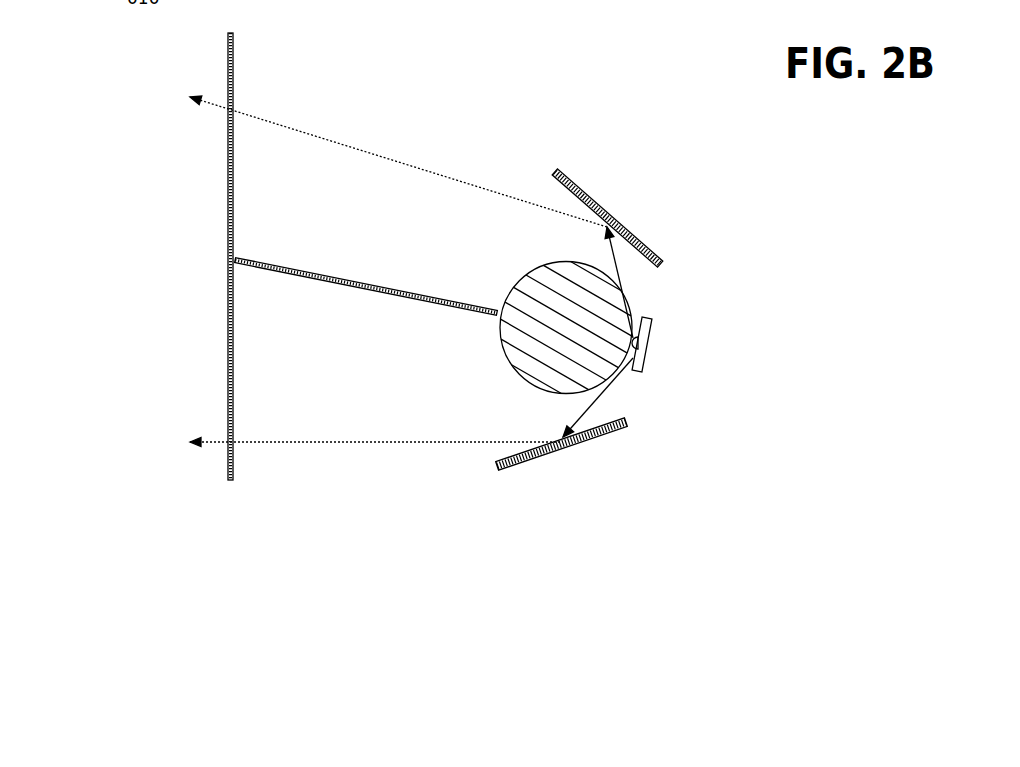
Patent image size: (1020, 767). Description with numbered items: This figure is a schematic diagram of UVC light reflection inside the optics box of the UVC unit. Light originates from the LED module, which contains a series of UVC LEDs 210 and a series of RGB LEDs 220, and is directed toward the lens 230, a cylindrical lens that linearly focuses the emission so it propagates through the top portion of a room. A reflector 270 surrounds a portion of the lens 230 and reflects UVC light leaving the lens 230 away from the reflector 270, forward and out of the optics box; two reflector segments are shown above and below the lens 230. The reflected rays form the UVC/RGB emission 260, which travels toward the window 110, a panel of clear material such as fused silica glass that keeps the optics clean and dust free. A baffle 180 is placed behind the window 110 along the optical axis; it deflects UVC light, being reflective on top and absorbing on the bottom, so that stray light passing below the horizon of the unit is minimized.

The window 110 is at (233, 480).
The baffle 180 is at (295, 267).
The UVC LEDs 210 is at (635, 334).
The RGB LEDs 220 is at (652, 318).
The lens 230 is at (530, 293).
The UVC/RGB emission 260 is at (213, 103).
The reflector 270 is at (572, 172).